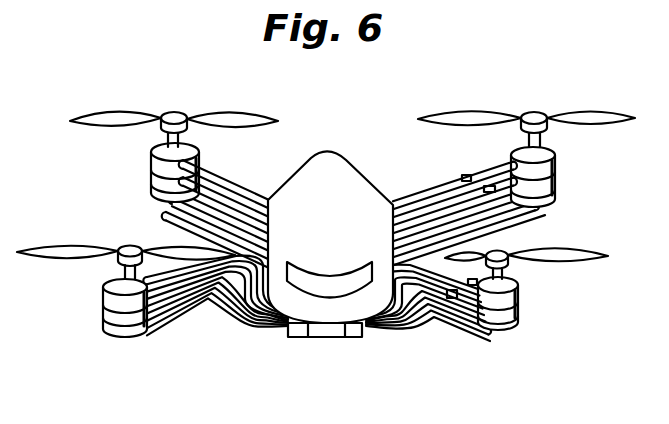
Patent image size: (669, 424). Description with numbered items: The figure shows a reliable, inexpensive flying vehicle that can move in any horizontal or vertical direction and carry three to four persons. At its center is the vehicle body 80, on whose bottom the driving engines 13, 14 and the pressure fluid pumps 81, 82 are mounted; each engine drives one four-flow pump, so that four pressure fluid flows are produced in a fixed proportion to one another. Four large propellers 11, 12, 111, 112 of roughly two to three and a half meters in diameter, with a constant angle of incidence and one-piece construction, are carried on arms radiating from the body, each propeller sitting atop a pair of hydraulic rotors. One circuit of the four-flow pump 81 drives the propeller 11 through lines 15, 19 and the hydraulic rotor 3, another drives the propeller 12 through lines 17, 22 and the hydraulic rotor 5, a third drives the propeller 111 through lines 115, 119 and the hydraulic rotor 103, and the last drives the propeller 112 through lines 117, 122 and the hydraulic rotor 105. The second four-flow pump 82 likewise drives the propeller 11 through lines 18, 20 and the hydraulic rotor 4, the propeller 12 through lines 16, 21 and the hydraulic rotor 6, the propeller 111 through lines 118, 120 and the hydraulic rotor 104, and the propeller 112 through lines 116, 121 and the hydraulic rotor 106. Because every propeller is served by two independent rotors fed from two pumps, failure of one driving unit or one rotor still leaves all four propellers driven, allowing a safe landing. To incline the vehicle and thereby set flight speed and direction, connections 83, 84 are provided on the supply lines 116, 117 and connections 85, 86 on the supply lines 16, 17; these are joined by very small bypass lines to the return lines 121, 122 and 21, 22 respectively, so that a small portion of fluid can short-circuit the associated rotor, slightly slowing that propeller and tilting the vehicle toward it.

The hydraulic rotor 3 is at (160, 165).
The hydraulic rotor 4 is at (165, 187).
The hydraulic rotor 5 is at (510, 302).
The hydraulic rotor 6 is at (512, 322).
The propeller 11 is at (113, 118).
The propeller 12 is at (570, 259).
The driving engine 13 is at (320, 337).
The driving engine 14 is at (341, 337).
The line 15 is at (212, 174).
The line 16 is at (424, 305).
The line 17 is at (437, 310).
The line 18 is at (221, 201).
The line 19 is at (165, 203).
The line 20 is at (212, 213).
The return line 21 is at (407, 300).
The return line 22 is at (381, 330).
The vehicle body 80 is at (322, 172).
The four-flow pump 81 is at (291, 337).
The four-flow pump 82 is at (355, 337).
The connection 83 is at (467, 175).
The connection 84 is at (489, 186).
The connection 85 is at (498, 293).
The connection 86 is at (456, 297).
The hydraulic rotor 103 is at (110, 295).
The hydraulic rotor 104 is at (118, 319).
The hydraulic rotor 105 is at (556, 165).
The hydraulic rotor 106 is at (557, 188).
The propeller 111 is at (60, 250).
The propeller 112 is at (592, 118).
The line 115 is at (223, 272).
The supply line 116 is at (440, 222).
The supply line 117 is at (412, 213).
The line 118 is at (201, 312).
The line 119 is at (153, 338).
The line 120 is at (173, 322).
The return line 121 is at (524, 218).
The return line 122 is at (552, 201).